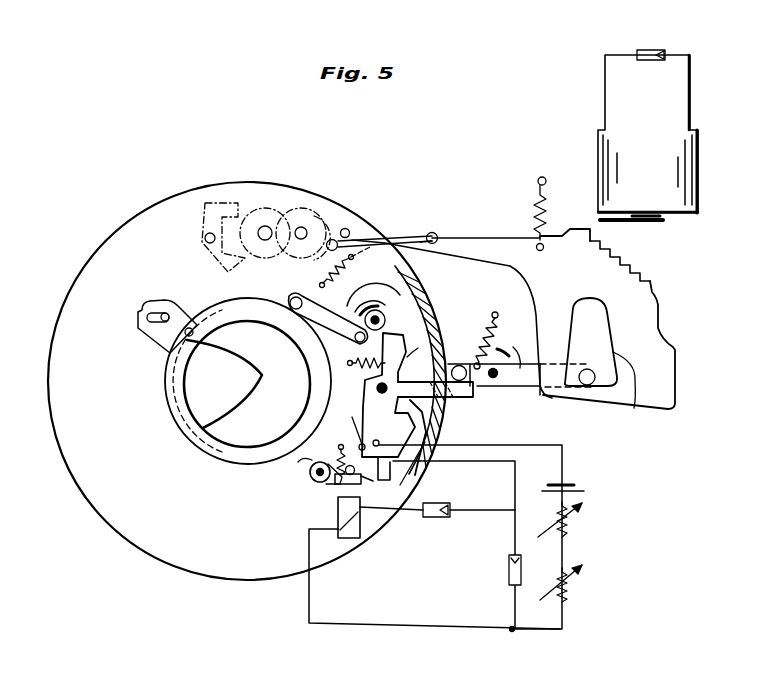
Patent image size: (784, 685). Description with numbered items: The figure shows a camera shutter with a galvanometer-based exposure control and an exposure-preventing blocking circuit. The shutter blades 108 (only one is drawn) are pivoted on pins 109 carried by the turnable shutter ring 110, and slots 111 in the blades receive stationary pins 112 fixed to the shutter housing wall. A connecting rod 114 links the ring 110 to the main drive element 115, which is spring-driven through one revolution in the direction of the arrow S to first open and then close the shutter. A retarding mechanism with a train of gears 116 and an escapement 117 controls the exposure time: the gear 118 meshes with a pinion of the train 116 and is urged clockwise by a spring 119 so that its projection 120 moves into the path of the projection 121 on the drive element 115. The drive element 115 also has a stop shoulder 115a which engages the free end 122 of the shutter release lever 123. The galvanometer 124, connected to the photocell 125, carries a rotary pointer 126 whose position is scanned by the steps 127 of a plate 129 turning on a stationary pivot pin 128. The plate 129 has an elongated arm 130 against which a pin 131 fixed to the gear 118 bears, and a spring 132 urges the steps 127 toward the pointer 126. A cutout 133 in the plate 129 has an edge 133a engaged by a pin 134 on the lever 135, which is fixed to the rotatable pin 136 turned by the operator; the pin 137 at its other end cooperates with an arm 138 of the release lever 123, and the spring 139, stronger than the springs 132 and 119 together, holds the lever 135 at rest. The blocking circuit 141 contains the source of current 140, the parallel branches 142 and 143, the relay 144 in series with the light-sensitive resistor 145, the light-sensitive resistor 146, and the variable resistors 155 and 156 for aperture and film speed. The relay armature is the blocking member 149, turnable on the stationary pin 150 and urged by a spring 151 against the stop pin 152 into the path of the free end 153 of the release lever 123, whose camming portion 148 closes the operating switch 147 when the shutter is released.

The shutter blades 108 is at (218, 370).
The pins 109 is at (191, 328).
The shutter ring 110 is at (198, 438).
The slots 111 is at (155, 323).
The stationary pins 112 is at (166, 313).
The connecting rod 114 is at (293, 336).
The main drive element 115 is at (424, 281).
The stop shoulder 115a is at (427, 318).
The train of gears 116 is at (297, 208).
The escapement 117 is at (210, 200).
The gear 118 is at (336, 218).
The spring 119 is at (320, 272).
The projection 120 is at (412, 232).
The projection 121 is at (290, 295).
The free end 122 is at (403, 305).
The shutter release lever 123 is at (365, 392).
The galvanometer 124 is at (616, 153).
The photocell 125 is at (655, 51).
The rotary pointer 126 is at (640, 226).
The steps 127 is at (663, 290).
The stationary pivot pin 128 is at (432, 232).
The plate 129 is at (522, 279).
The elongated arm 130 is at (455, 239).
The pin 131 is at (349, 232).
The spring 132 is at (538, 192).
The cutout 133 is at (643, 404).
The edge 133a is at (606, 388).
The pin 134 is at (587, 369).
The lever 135 is at (502, 385).
The pin 136 is at (500, 378).
The pin 137 is at (459, 365).
The arm 138 is at (445, 398).
The spring 139 is at (497, 318).
The source of current 140 is at (574, 486).
The circuit 141 is at (515, 484).
The branch 142 is at (309, 600).
The branch 143 is at (513, 609).
The relay 144 is at (356, 536).
The light-sensitive resistor 145 is at (437, 518).
The light-sensitive resistor 146 is at (508, 573).
The operating switch 147 is at (362, 424).
The camming portion 148 is at (455, 433).
The blocking member 149 is at (348, 486).
The stationary pin 150 is at (314, 479).
The spring 151 is at (312, 460).
The stationary stop pin 152 is at (378, 482).
The free end 153 is at (418, 474).
The variable resistor 155 is at (565, 528).
The variable resistor 156 is at (566, 598).
The arrow S is at (392, 291).
The projection p is at (418, 345).
The radius r is at (515, 355).